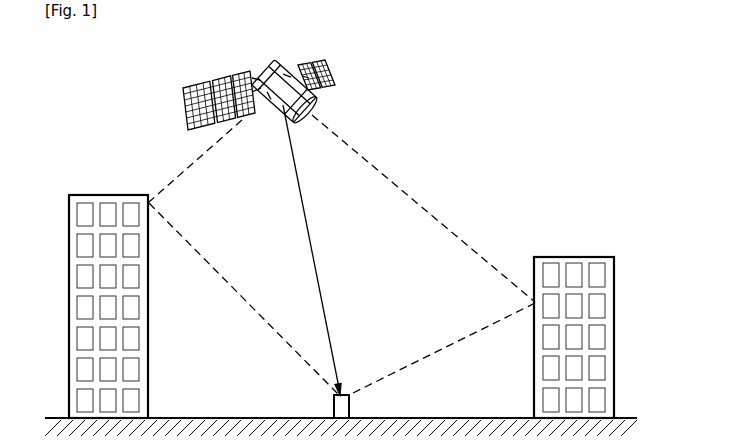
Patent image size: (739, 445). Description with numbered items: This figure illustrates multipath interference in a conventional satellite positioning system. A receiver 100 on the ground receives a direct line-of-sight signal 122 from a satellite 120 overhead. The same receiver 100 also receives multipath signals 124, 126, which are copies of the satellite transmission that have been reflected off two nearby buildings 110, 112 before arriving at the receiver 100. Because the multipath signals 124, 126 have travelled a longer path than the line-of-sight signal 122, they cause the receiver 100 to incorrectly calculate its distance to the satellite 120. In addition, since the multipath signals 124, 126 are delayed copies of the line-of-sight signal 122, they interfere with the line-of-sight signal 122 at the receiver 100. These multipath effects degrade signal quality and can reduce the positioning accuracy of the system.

The receiver 100 is at (334, 408).
The building 110 is at (110, 195).
The building 112 is at (573, 257).
The satellite 120 is at (328, 63).
The line-of-sight signal 122 is at (321, 272).
The multipath signal 124 is at (224, 279).
The multipath signal 126 is at (452, 232).